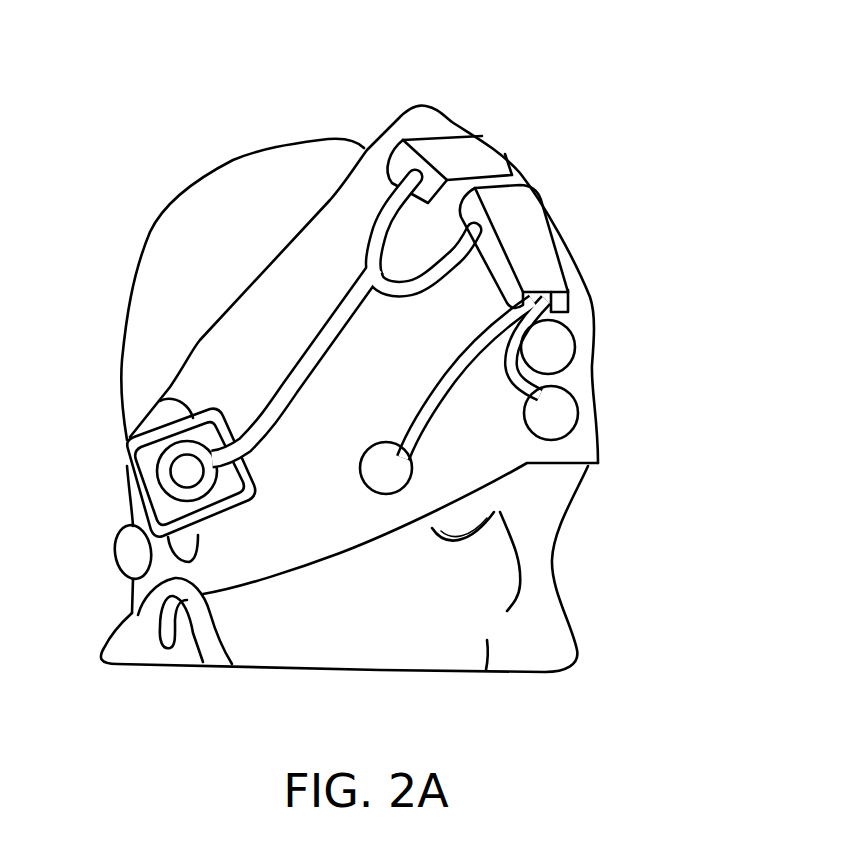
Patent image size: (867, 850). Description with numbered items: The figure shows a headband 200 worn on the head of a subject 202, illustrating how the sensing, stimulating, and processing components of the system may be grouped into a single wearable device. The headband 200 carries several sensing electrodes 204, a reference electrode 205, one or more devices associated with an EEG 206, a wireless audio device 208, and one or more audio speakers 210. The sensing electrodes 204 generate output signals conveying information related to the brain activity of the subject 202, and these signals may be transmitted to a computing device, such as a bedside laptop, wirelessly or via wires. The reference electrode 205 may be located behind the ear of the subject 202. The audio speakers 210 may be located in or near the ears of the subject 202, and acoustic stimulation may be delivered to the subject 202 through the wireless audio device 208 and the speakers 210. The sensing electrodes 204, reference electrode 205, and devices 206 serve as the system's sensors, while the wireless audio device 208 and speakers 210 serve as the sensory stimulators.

The headband 200 is at (606, 64).
The subject 202 is at (262, 149).
The sensing electrodes 204 is at (563, 350).
The reference electrode 205 is at (131, 553).
The devices associated with an EEG 206 is at (540, 242).
The wireless audio device 208 is at (480, 148).
The audio speakers 210 is at (146, 461).